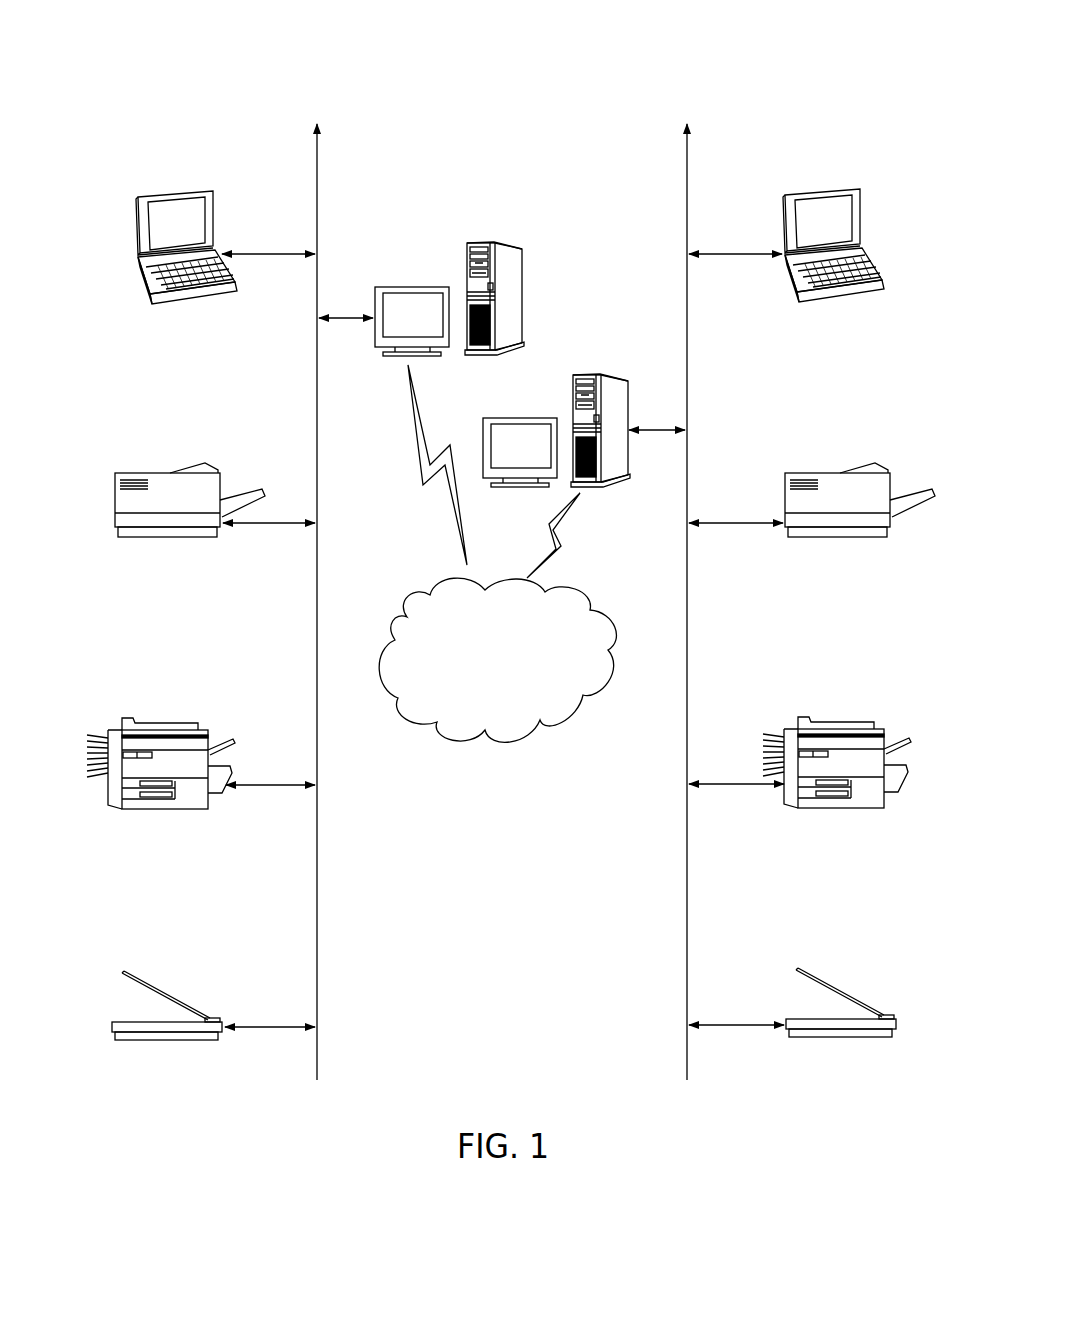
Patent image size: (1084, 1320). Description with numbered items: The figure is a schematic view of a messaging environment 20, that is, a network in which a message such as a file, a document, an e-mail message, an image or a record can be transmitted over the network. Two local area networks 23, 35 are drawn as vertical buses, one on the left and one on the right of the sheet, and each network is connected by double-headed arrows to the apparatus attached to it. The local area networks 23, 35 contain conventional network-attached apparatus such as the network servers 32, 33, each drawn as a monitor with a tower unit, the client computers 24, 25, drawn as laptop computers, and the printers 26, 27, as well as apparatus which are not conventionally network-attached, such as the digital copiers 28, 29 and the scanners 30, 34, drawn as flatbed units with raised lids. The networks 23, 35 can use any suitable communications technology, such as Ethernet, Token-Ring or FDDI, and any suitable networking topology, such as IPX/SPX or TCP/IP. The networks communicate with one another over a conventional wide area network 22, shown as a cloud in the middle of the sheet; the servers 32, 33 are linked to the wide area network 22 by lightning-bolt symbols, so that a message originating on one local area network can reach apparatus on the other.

The messaging environment 20 is at (563, 122).
The wide area network 22 is at (475, 746).
The local area network 23 is at (318, 1045).
The client computer 24 is at (172, 194).
The client computer 25 is at (840, 190).
The printer 26 is at (135, 472).
The printer 27 is at (816, 472).
The digital copier 28 is at (166, 744).
The digital copier 29 is at (838, 724).
The scanner 30 is at (152, 988).
The network server 32 is at (405, 286).
The network server 33 is at (589, 374).
The scanner 34 is at (831, 987).
The local area network 35 is at (687, 1045).